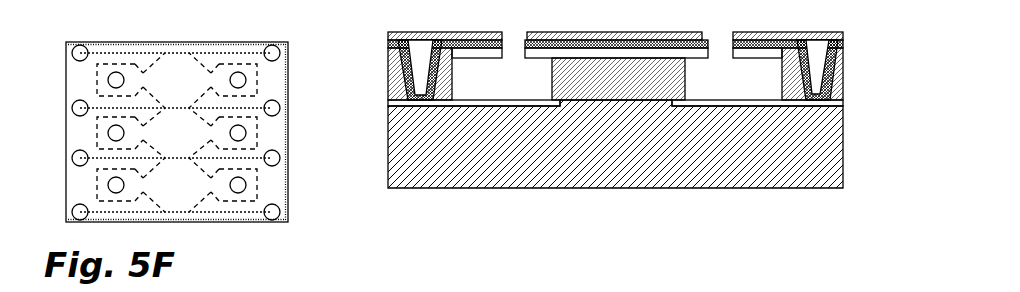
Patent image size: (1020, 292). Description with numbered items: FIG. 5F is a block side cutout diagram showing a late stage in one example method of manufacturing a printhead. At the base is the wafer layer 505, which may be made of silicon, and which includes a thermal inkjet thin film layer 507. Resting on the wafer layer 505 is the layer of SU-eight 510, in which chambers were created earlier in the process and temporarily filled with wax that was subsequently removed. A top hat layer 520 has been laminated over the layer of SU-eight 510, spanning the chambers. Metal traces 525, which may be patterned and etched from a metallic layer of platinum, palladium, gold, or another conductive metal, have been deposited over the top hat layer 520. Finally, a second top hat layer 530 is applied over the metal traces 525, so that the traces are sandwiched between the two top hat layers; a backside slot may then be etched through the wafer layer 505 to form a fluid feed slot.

The wafer layer 505 is at (827, 165).
The thermal inkjet thin film layer 507 is at (837, 103).
The layer of SU-8 510 is at (258, 175).
The top hat layer 520 is at (192, 62).
The metal traces 525 is at (250, 108).
The second top hat layer 530 is at (275, 130).